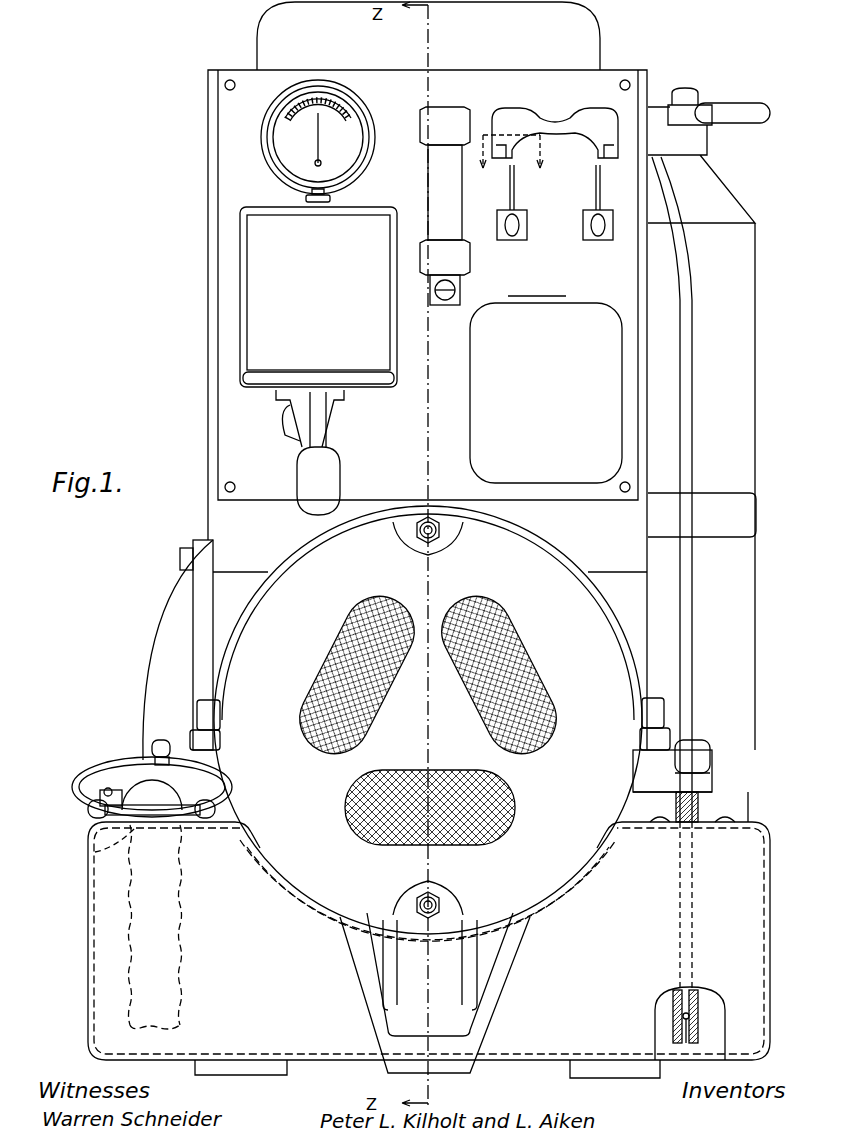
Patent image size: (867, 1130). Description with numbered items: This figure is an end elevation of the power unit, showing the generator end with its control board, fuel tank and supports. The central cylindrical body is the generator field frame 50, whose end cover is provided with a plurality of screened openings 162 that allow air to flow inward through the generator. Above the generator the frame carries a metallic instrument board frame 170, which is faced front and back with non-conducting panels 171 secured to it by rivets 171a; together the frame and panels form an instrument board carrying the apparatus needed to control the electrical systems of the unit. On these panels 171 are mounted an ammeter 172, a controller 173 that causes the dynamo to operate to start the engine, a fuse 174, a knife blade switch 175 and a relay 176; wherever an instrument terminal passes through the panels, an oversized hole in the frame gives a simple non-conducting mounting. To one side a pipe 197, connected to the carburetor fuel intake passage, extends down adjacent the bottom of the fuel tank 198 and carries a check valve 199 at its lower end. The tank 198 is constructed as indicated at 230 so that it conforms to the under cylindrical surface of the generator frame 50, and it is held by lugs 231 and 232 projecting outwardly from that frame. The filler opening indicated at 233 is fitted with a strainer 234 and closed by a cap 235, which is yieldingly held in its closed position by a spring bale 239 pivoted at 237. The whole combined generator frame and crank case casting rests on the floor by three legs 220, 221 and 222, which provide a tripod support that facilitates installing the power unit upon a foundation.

The field frame 50 is at (240, 625).
The screened openings 162 is at (360, 618).
The instrument board frame 170 is at (212, 203).
The non-conducting panels 171 is at (232, 290).
The rivets 171a is at (230, 78).
The ammeter 172 is at (270, 118).
The controller 173 is at (262, 335).
The fuse 174 is at (437, 162).
The knife blade switch 175 is at (548, 130).
The relay 176 is at (480, 392).
The pipe 197 is at (687, 355).
The fuel tank 198 is at (768, 966).
The check valve 199 is at (698, 1030).
The leg 220 is at (240, 1070).
The leg 221 is at (600, 1070).
The leg 222 is at (462, 1076).
The tank conforming portion 230 is at (296, 893).
The lug 231 is at (198, 758).
The lug 232 is at (655, 780).
The filler opening 233 is at (90, 853).
The strainer 234 is at (130, 907).
The cap 235 is at (150, 757).
The pivot 237 is at (209, 857).
The spring bale 239 is at (74, 790).